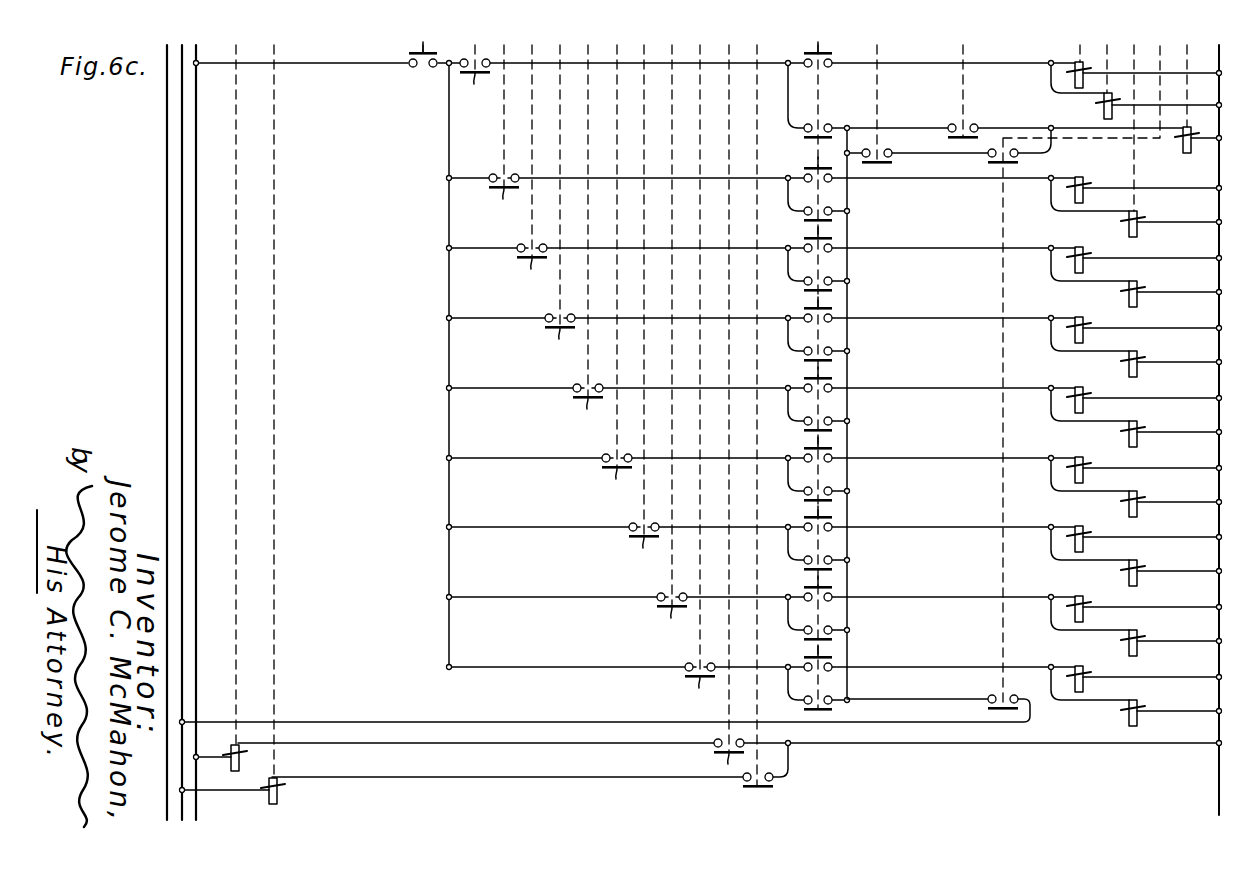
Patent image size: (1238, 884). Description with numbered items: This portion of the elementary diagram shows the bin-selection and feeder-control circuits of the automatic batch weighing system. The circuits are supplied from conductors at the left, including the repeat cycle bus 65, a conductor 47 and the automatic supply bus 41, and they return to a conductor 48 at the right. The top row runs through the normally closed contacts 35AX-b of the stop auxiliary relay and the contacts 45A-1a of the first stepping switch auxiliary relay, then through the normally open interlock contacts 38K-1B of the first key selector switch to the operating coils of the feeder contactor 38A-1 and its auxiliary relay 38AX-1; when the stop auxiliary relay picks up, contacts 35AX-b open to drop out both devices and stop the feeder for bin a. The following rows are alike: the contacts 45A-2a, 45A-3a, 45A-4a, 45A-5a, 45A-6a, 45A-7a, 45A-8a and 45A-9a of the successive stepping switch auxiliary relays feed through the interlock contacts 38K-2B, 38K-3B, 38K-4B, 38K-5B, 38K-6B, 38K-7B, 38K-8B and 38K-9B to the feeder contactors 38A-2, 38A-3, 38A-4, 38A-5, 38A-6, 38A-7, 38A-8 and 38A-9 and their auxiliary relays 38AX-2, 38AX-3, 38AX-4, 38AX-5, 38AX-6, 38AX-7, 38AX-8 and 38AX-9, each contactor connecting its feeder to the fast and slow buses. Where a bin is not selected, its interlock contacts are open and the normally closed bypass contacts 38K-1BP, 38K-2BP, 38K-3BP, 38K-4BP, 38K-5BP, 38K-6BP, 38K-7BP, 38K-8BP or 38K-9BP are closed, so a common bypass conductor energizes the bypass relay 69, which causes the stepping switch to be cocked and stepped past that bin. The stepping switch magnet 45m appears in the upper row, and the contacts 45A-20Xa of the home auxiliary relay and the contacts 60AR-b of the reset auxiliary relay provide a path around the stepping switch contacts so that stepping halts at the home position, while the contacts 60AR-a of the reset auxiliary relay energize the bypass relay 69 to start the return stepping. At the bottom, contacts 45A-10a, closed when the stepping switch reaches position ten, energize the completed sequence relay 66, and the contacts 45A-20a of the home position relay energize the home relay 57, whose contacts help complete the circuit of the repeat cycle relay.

The repeat cycle bus 65 is at (167, 205).
The conductor 47 is at (183, 205).
The automatic supply bus 41 is at (197, 247).
The return conductor 48 is at (1219, 210).
The completed sequence relay 66 is at (229, 767).
The home relay 57 is at (277, 800).
The bypass relay 69 is at (1190, 150).
The normally closed contacts of stop auxiliary relay 35AX-b is at (413, 69).
The stepping switch magnet 45m is at (956, 124).
The normally open contacts of stepping switch auxiliary relay 45A-1a is at (473, 83).
The normally open contacts of stepping switch auxiliary relay 45A-2a is at (497, 196).
The contacts of stepping switch auxiliary relay 45A-3a is at (525, 266).
The normally open contacts of stepping switch auxiliary relay 45A-4a is at (553, 336).
The normally open contacts of stepping switch auxiliary relay 45A-5a is at (581, 406).
The normally open contacts of stepping switch auxiliary relay 45A-6a is at (610, 476).
The normally open contacts of stepping switch auxiliary relay 45A-7a is at (637, 545).
The normally open contacts of stepping switch auxiliary relay 45A-8a is at (665, 615).
The normally open contacts of stepping switch auxiliary relay 45A-9a is at (693, 685).
The normally open contacts of auxiliary relay 45A-10a is at (728, 755).
The contacts of home position relay 45A-20a is at (773, 788).
The contacts of home auxiliary relay 45A-20Xa is at (881, 152).
The contacts of reset auxiliary relay 60AR-a is at (1005, 713).
The contacts of reset auxiliary relay 60AR-b is at (989, 158).
The normally open interlock contacts of key selector switch 38K-1B is at (803, 53).
The normally closed contacts of key selector switch 38K-1BP is at (820, 132).
The normally open interlock contacts of key selector switch 38K-2B is at (803, 168).
The normally closed bypass contacts of key selector switch 38K-2BP is at (834, 216).
The normally open interlock contacts of key selector switch 38K-3B is at (803, 238).
The normally closed contacts of key selector switch 38K-3BP is at (834, 286).
The normally open interlock contacts of key selector switch 38K-4B is at (803, 308).
The normally closed contacts of key selector switch 38K-4BP is at (834, 356).
The normally open interlock contacts of key selector switch 38K-5B is at (803, 378).
The normally closed contacts of key selector switch 38K-5BP is at (834, 426).
The normally open interlock contacts of key selector switch 38K-6B is at (803, 448).
The normally closed contacts of key selector switch 38K-6BP is at (834, 496).
The normally open interlock contacts of key selector switch 38K-7B is at (803, 517).
The normally closed contacts of key selector switch 38K-7BP is at (834, 565).
The normally open interlock contacts of key selector switch 38K-8B is at (803, 587).
The normally closed contacts of key selector switch 38K-8BP is at (834, 635).
The normally open interlock contacts of key selector switch 38K-9B is at (803, 657).
The normally closed contacts of key selector switch 38K-9BP is at (834, 705).
The feeder contactor 38A-1 is at (1077, 61).
The feeder contactor 38A-2 is at (1082, 171).
The feeder contactor 38A-3 is at (1082, 241).
The feeder contactor 38A-4 is at (1082, 311).
The feeder contactor 38A-5 is at (1082, 381).
The feeder contactor 38A-6 is at (1082, 451).
The feeder contactor 38A-7 is at (1082, 520).
The feeder contactor 38A-8 is at (1082, 590).
The feeder contactor 38A-9 is at (1082, 660).
The auxiliary relay 38AX-1 is at (1104, 113).
The auxiliary relay 38AX-2 is at (1138, 227).
The auxiliary relay 38AX-3 is at (1138, 297).
The auxiliary relay 38AX-4 is at (1138, 367).
The auxiliary relay 38AX-5 is at (1138, 437).
The auxiliary relay 38AX-6 is at (1138, 507).
The auxiliary relay 38AX-7 is at (1138, 576).
The auxiliary relay 38AX-8 is at (1138, 646).
The auxiliary relay 38AX-9 is at (1138, 716).